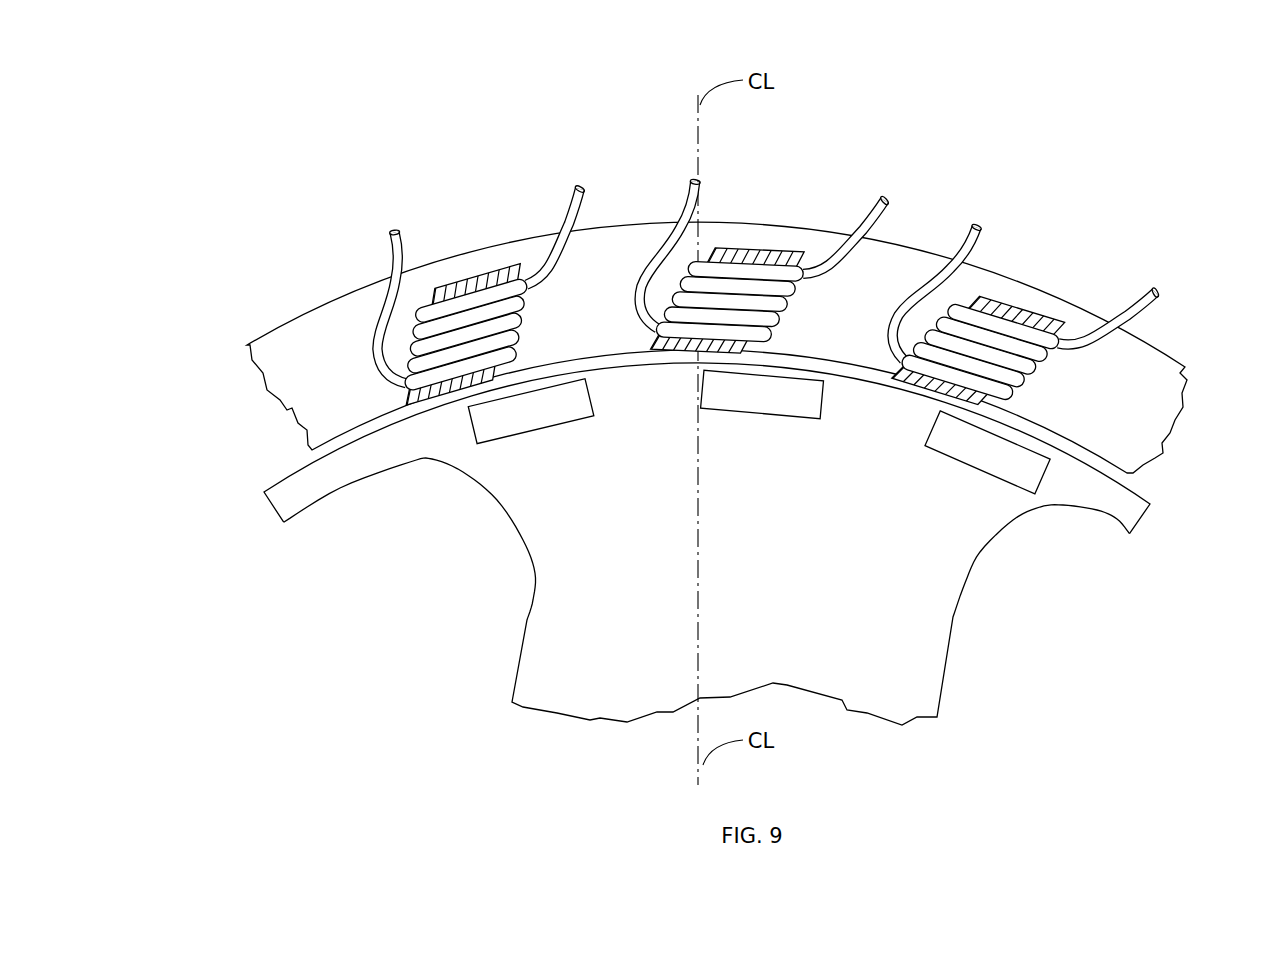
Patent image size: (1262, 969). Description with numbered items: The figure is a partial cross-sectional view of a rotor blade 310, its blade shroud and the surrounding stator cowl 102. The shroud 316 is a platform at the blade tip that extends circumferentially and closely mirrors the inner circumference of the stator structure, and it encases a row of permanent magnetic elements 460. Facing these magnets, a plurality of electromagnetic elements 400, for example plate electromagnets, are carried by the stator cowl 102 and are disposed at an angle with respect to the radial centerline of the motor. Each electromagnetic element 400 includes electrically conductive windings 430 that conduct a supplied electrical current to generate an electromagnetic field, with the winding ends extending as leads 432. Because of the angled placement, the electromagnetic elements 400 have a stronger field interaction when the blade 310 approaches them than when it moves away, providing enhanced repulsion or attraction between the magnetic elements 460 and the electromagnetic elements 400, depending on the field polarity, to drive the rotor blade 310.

The stator cowl 102 is at (298, 323).
The rotor blade 310 is at (933, 637).
The shroud 316 is at (285, 503).
The electromagnetic elements 400 is at (483, 283).
The electrically conductive windings 430 is at (512, 305).
The coil lead wire 432 is at (400, 232).
The permanent magnetic elements 460 is at (542, 413).